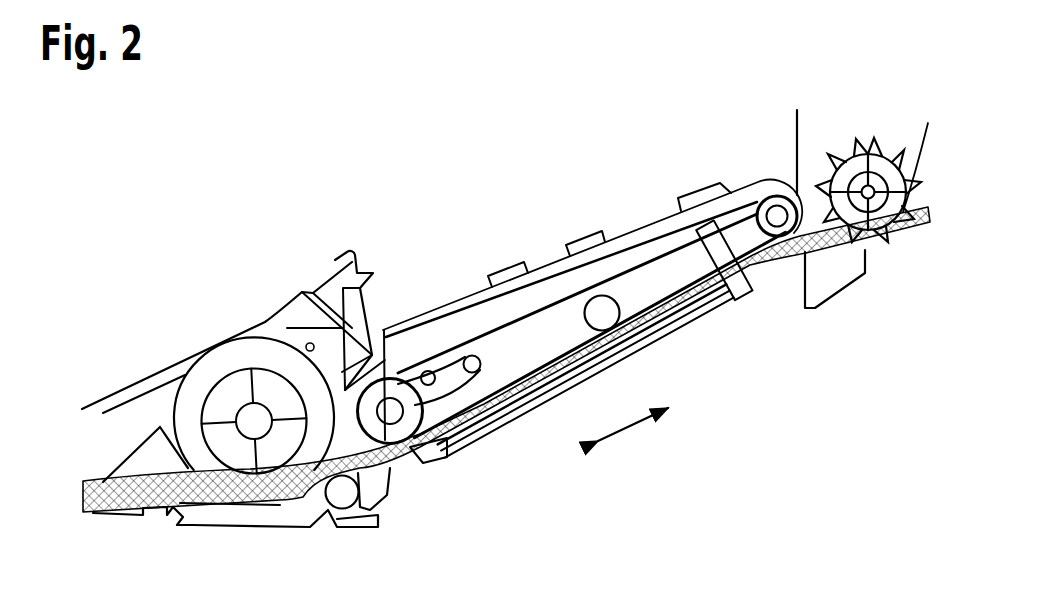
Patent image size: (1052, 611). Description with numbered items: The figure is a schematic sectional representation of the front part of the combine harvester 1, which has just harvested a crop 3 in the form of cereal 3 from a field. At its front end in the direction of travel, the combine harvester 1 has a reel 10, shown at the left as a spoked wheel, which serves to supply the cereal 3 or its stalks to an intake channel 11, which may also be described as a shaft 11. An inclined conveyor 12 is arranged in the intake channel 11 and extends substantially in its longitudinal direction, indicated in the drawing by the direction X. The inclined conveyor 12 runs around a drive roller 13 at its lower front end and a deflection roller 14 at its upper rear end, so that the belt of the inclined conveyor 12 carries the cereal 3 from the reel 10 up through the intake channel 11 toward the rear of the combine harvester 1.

The combine harvester 1 is at (258, 187).
The crop 3 is at (118, 497).
The reel 10 is at (205, 336).
The intake channel 11 is at (529, 258).
The inclined conveyor 12 is at (479, 327).
The drive roller 13 is at (410, 416).
The deflection roller 14 is at (775, 230).